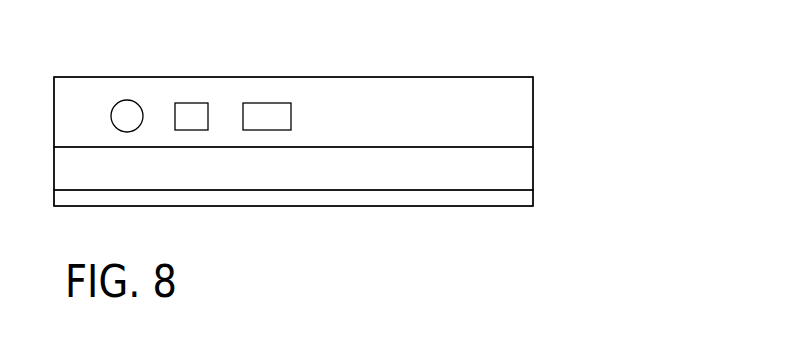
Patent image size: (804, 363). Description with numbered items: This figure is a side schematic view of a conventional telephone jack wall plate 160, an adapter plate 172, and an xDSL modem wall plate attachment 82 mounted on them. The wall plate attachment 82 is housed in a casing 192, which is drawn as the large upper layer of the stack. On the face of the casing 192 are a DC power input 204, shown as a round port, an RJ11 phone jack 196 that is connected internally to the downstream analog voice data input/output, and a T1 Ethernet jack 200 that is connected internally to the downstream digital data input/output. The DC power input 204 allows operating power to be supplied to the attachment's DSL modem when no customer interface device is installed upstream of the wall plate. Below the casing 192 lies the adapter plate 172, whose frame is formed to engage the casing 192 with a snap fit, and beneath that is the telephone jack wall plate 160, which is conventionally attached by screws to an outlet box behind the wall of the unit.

The wall plate attachment 82 is at (565, 109).
The casing 192 is at (388, 97).
The adapter plate 172 is at (517, 168).
The telephone jack wall plate 160 is at (522, 200).
The DC power input 204 is at (122, 112).
The RJ11 phone jack 196 is at (182, 110).
The T1 Ethernet jack 200 is at (277, 116).